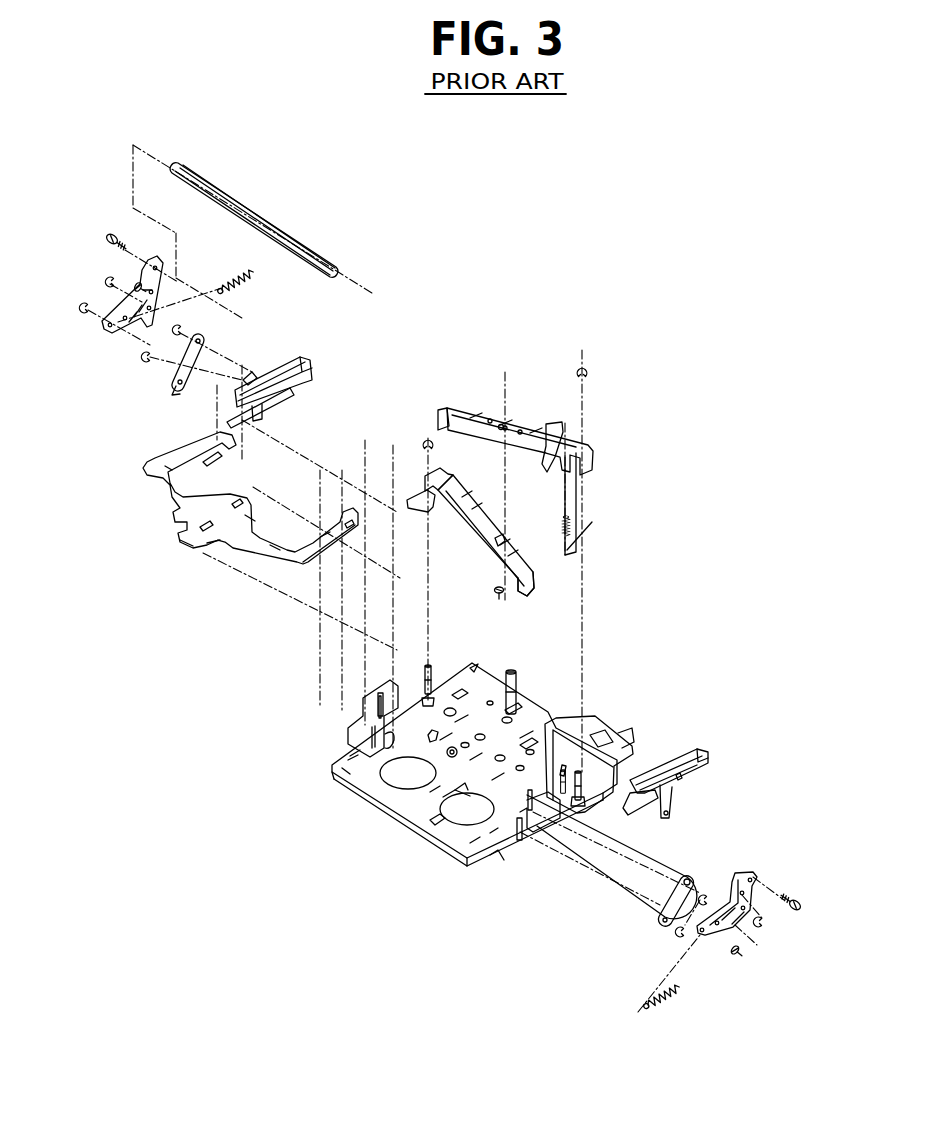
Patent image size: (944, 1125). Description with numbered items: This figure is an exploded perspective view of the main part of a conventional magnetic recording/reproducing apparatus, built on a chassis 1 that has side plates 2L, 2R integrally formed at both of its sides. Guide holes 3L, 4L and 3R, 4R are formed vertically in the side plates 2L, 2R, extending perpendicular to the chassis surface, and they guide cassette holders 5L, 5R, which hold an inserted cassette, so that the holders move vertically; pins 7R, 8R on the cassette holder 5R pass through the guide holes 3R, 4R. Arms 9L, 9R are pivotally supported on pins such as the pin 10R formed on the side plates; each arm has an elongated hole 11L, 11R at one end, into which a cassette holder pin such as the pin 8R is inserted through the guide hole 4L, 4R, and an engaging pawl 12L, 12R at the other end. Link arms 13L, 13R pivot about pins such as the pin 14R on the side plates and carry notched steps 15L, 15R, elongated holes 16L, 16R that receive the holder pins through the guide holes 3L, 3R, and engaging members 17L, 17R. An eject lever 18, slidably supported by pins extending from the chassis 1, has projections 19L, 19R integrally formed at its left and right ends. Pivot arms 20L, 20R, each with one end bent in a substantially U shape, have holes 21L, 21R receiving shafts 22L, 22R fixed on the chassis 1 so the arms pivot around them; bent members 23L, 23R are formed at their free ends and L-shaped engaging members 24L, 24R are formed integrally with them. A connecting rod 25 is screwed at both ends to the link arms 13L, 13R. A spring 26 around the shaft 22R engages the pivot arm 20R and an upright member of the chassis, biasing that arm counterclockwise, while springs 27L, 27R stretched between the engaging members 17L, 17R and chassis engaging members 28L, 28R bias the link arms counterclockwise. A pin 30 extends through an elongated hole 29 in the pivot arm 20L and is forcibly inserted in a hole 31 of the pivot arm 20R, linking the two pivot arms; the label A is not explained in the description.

The chassis 1 is at (400, 812).
The side plate 2L is at (348, 742).
The side plate 2R is at (553, 845).
The guide hole 3L is at (372, 722).
The guide hole 3R is at (520, 856).
The guide hole 4L is at (368, 703).
The guide hole 4R is at (432, 823).
The cassette holder 5L is at (268, 366).
The cassette holder 5R is at (690, 779).
The pin 7R is at (670, 812).
The pin 8R is at (684, 780).
The arm 9L is at (183, 357).
The arm 9R is at (658, 912).
The pin 10R is at (490, 858).
The elongated hole 11L is at (205, 333).
The elongated hole 11R is at (673, 882).
The engaging pawl 12L is at (178, 390).
The engaging pawl 12R is at (672, 938).
The link arm 13L is at (163, 290).
The link arm 13R is at (757, 921).
The pin 14R is at (575, 772).
The notched step 15L is at (143, 270).
The notched step 15R is at (752, 875).
The elongated hole 16L is at (105, 328).
The elongated hole 16R is at (703, 937).
The engaging member 17L is at (147, 327).
The engaging member 17R is at (737, 945).
The eject lever 18 is at (222, 545).
The projection 19L is at (160, 457).
The projection 19R is at (304, 568).
The pivot arm 20L is at (480, 530).
The pivot arm 20R is at (530, 440).
The hole 21L is at (430, 470).
The hole 21R is at (592, 445).
The shaft 22L is at (432, 664).
The shaft 22R is at (588, 760).
The bent member 23L is at (528, 600).
The bent member 23R is at (438, 424).
The L-shaped engaging member 24L is at (412, 497).
The L-shaped engaging member 24R is at (548, 440).
The connecting rod 25 is at (248, 214).
The spring 26 is at (563, 530).
The spring 27L is at (232, 283).
The spring 27R is at (660, 1005).
The engaging member 28L is at (483, 690).
The engaging member 28R is at (617, 780).
The elongated hole 29 is at (503, 540).
The pin 30 is at (495, 594).
The hole 31 is at (502, 425).
The axis A is at (738, 880).